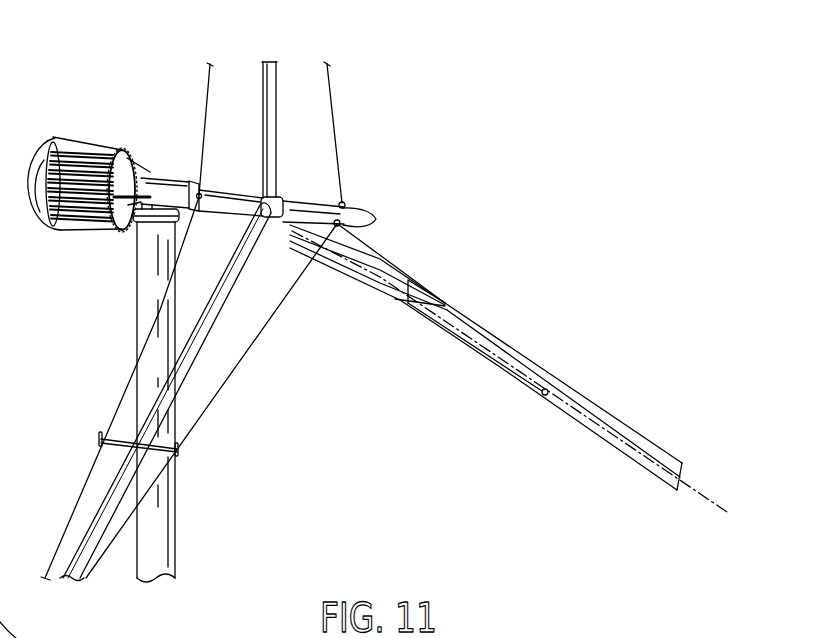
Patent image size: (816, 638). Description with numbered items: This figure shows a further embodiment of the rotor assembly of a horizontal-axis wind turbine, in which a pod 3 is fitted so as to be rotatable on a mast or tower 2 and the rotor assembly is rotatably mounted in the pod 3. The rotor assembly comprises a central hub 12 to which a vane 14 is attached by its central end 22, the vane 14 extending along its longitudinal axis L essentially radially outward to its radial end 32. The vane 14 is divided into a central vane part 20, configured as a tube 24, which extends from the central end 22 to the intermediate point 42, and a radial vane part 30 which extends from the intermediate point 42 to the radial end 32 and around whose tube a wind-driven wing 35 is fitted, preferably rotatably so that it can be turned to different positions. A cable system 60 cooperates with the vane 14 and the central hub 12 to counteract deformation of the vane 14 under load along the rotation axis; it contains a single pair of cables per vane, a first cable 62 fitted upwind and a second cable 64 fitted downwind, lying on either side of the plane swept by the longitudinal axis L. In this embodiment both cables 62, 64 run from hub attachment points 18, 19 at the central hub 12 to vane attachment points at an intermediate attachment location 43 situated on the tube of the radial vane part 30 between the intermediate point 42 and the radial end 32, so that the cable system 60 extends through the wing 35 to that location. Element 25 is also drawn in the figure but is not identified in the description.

The mast or tower 2 is at (172, 503).
The pod 3 is at (150, 175).
The central hub 12 is at (290, 202).
The vane 14 is at (523, 386).
The hub attachment point 18 is at (171, 186).
The hub attachment point 19 is at (357, 207).
The central vane part 20 is at (350, 175).
The central end 22 is at (262, 195).
The tube 24 is at (267, 118).
The strut 25 is at (238, 250).
The radial vane part 30 is at (523, 389).
The radial end 32 is at (699, 469).
The wing 35 is at (578, 392).
The intermediate point 42 is at (377, 342).
The intermediate attachment location 43 is at (528, 422).
The cable system 60 is at (409, 306).
The first cable 62 is at (206, 120).
The second cable 64 is at (333, 120).
The longitudinal axis L is at (707, 498).